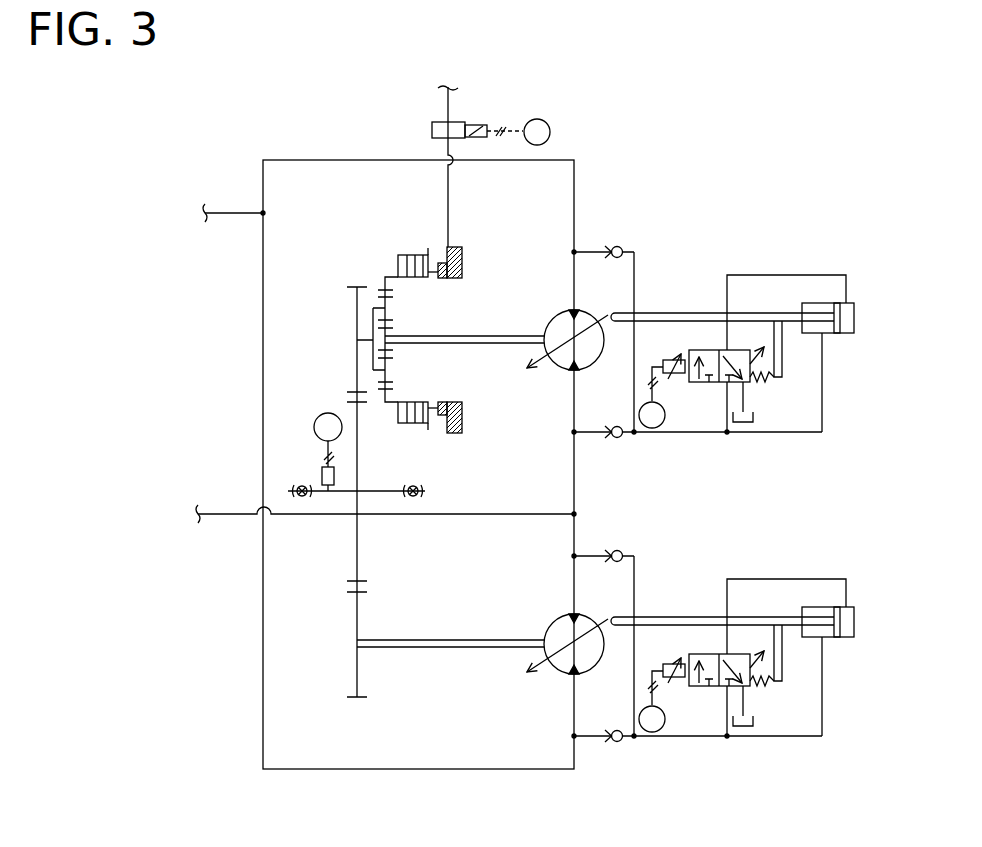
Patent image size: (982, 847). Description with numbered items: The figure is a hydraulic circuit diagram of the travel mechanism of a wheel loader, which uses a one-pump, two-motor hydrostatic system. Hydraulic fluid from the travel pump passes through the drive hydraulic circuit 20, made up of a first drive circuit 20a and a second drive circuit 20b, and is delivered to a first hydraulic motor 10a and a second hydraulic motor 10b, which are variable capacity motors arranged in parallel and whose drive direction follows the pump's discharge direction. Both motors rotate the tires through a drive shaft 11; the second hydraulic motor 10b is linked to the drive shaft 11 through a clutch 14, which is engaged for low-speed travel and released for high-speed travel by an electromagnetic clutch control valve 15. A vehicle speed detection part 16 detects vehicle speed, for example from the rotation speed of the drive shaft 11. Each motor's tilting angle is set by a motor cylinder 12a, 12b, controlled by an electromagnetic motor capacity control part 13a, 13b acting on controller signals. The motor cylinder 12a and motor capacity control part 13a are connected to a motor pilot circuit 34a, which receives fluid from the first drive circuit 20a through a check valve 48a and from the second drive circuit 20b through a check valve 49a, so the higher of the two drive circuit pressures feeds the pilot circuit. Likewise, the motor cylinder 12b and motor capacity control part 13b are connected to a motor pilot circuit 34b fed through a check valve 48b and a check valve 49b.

The first hydraulic motor 10a is at (557, 613).
The second hydraulic motor 10b is at (557, 309).
The drive shaft 11 is at (379, 493).
The motor cylinder 12a is at (848, 607).
The motor cylinder 12b is at (848, 303).
The motor capacity control part 13a is at (712, 653).
The motor capacity control part 13b is at (712, 350).
The clutch 14 is at (417, 252).
The clutch control valve 15 is at (432, 126).
The vehicle speed detection part 16 is at (322, 475).
The drive hydraulic circuit 20 is at (272, 131).
The first drive circuit 20a is at (238, 210).
The second drive circuit 20b is at (221, 517).
The motor pilot circuit 34a is at (730, 666).
The motor pilot circuit 34b is at (730, 360).
The check valve 48a is at (617, 743).
The check valve 48b is at (617, 246).
The check valve 49a is at (617, 549).
The check valve 49b is at (617, 439).